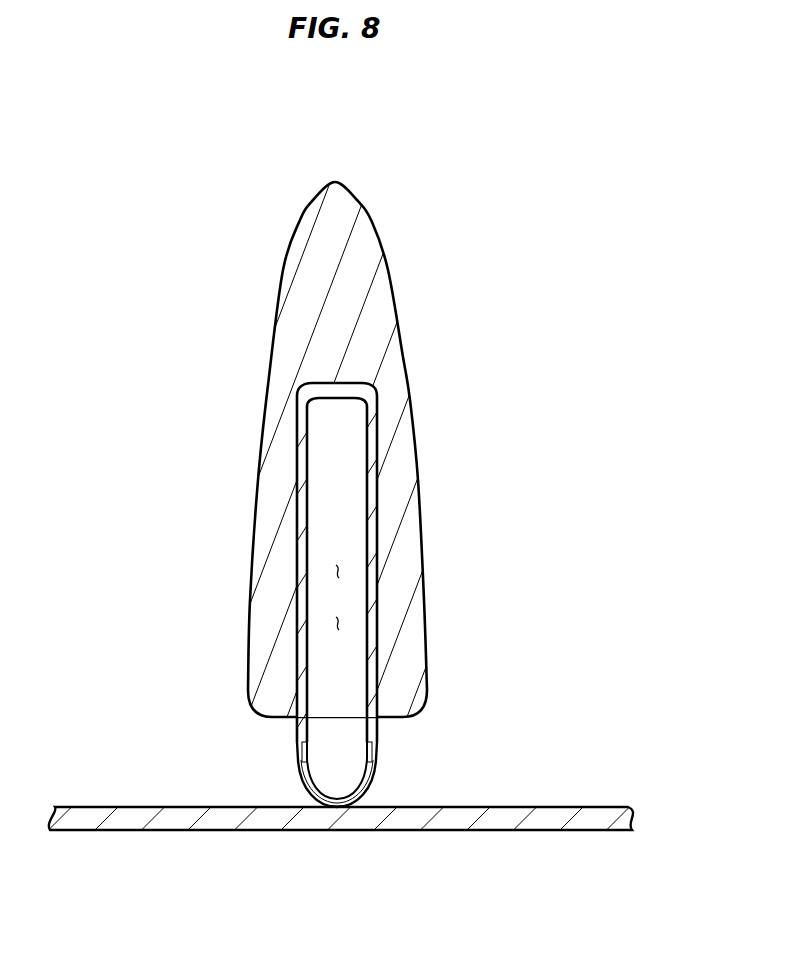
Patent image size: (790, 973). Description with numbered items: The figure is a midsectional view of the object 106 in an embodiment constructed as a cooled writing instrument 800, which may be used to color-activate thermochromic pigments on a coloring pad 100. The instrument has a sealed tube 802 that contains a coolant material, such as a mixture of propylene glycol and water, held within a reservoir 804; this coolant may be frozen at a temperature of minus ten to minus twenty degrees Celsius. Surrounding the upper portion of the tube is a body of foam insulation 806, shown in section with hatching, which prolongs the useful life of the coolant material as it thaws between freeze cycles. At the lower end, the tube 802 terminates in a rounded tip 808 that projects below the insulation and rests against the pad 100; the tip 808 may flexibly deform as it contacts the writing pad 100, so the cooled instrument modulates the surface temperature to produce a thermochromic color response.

The coloring pad 100 is at (90, 806).
The object 106 is at (176, 157).
The cooled writing instrument 800 is at (422, 255).
The sealed tube 802 is at (378, 762).
The reservoir 804 is at (337, 597).
The foam insulation 806 is at (403, 362).
The rounded tip 808 is at (322, 803).